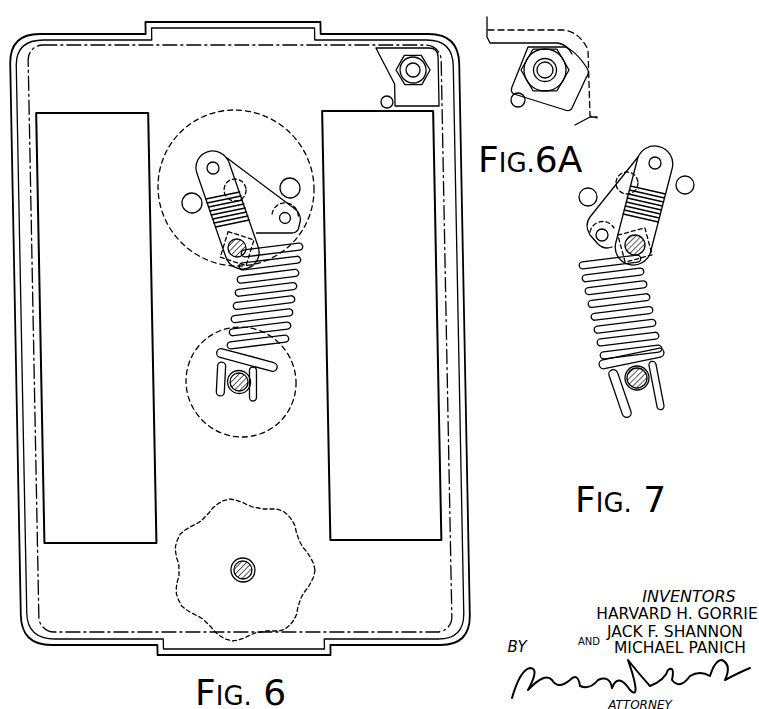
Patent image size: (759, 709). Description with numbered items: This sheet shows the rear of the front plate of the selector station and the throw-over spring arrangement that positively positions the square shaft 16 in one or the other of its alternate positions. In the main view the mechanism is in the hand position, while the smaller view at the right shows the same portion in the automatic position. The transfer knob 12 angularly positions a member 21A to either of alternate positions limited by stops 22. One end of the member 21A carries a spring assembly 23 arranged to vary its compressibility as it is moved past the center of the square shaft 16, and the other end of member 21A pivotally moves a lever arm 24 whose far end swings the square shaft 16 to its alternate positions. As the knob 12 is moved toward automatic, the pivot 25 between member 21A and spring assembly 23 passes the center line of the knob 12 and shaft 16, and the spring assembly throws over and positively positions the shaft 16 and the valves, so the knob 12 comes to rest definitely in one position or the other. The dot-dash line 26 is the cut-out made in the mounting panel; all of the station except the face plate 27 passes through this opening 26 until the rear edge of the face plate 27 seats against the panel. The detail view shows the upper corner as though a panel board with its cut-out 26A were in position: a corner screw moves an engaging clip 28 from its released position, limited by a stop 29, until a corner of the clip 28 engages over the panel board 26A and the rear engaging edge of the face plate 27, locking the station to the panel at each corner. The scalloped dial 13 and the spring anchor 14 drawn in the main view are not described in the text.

In FIG. 6, the transfer knob 12 is at (205, 110).
In FIG. 6, the cam dial 13 is at (320, 575).
In FIG. 6, the spring anchor bracket 14 is at (211, 428).
In FIG. 6, the square shaft 16 is at (224, 258).
In FIG. 7, the square shaft 16 is at (647, 250).
In FIG. 6, the member 21A is at (242, 164).
In FIG. 7, the member 21A is at (624, 162).
In FIG. 6, the stops 22 is at (189, 212).
In FIG. 7, the stops 22 is at (695, 185).
In FIG. 6, the spring assembly 23 is at (240, 311).
In FIG. 7, the spring assembly 23 is at (650, 306).
In FIG. 6, the lever arm 24 is at (200, 188).
In FIG. 7, the lever arm 24 is at (668, 210).
In FIG. 6, the pivot 25 is at (285, 214).
In FIG. 7, the pivot 25 is at (590, 224).
In FIG. 6, the cut-out 26 is at (308, 47).
In FIG. 6A, the panel board cut-out 26A is at (512, 44).
In FIG. 6, the face plate 27 is at (459, 412).
In FIG. 6, the engaging clip 28 is at (374, 50).
In FIG. 6A, the engaging clip 28 is at (568, 106).
In FIG. 6, the stop 29 is at (379, 101).
In FIG. 6A, the stop 29 is at (511, 100).